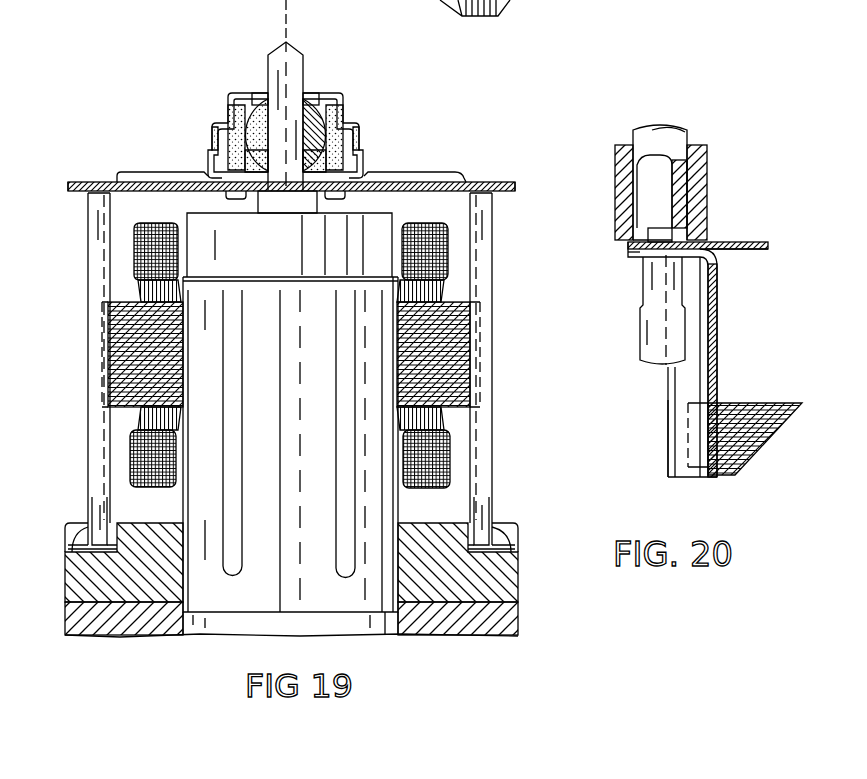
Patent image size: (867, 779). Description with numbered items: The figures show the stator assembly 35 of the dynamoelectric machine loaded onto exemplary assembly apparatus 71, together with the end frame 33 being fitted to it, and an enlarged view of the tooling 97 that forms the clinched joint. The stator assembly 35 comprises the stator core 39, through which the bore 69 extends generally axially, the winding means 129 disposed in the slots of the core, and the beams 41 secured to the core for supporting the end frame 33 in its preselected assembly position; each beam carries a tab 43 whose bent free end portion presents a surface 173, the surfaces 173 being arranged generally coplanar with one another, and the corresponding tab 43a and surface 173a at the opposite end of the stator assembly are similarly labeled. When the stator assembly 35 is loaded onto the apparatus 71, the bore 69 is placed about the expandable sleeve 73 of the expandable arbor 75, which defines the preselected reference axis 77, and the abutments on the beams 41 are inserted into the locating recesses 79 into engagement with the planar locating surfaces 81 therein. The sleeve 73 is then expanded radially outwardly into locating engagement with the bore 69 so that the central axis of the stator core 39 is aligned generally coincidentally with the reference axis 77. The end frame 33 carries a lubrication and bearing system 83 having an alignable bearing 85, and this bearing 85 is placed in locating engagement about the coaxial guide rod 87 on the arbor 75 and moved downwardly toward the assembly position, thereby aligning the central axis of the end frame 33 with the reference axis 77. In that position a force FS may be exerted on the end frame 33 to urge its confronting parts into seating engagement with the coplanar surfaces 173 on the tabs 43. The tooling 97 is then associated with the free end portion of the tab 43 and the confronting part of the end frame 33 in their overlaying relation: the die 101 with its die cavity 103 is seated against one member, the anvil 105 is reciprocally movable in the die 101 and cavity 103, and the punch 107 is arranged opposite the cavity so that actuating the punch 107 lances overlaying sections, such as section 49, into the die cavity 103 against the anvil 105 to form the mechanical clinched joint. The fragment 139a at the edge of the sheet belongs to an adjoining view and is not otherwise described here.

In FIG. 19, the reference axis 77 is at (286, 24).
In FIG. 19, the guide rod 87 is at (304, 72).
In FIG. 19, the lubrication and bearing system 83 is at (212, 108).
In FIG. 19, the alignable bearing 85 is at (322, 128).
In FIG. 19, the end frame 33 is at (300, 169).
In FIG. 19, the surfaces 173 is at (80, 182).
In FIG. 19, the tabs 43 is at (78, 193).
In FIG. 19, the force FS is at (160, 170).
In FIG. 19, the stator assembly 35 is at (275, 369).
In FIG. 20, the stator assembly 35 is at (773, 495).
In FIG. 19, the beams 41 is at (88, 326).
In FIG. 19, the locating recesses 79 is at (82, 522).
In FIG. 19, the overlaying section 49 is at (108, 348).
In FIG. 19, the bore 69 is at (398, 353).
In FIG. 19, the winding means 129 is at (130, 258).
In FIG. 19, the expandable sleeve 73 is at (331, 449).
In FIG. 19, the locating surfaces 81 is at (299, 559).
In FIG. 19, the bracket edge 43a is at (70, 540).
In FIG. 19, the bracket flange 173a is at (550, 551).
In FIG. 19, the expandable arbor 75 is at (216, 618).
In FIG. 19, the apparatus 71 is at (386, 650).
In FIG. 20, the fragment 139a is at (516, 13).
In FIG. 20, the tooling 97 is at (660, 284).
In FIG. 20, the die 101 is at (615, 166).
In FIG. 20, the die cavity 103 is at (648, 236).
In FIG. 20, the anvil 105 is at (670, 128).
In FIG. 20, the punch 107 is at (644, 345).
In FIG. 20, the stator core 39 is at (764, 440).